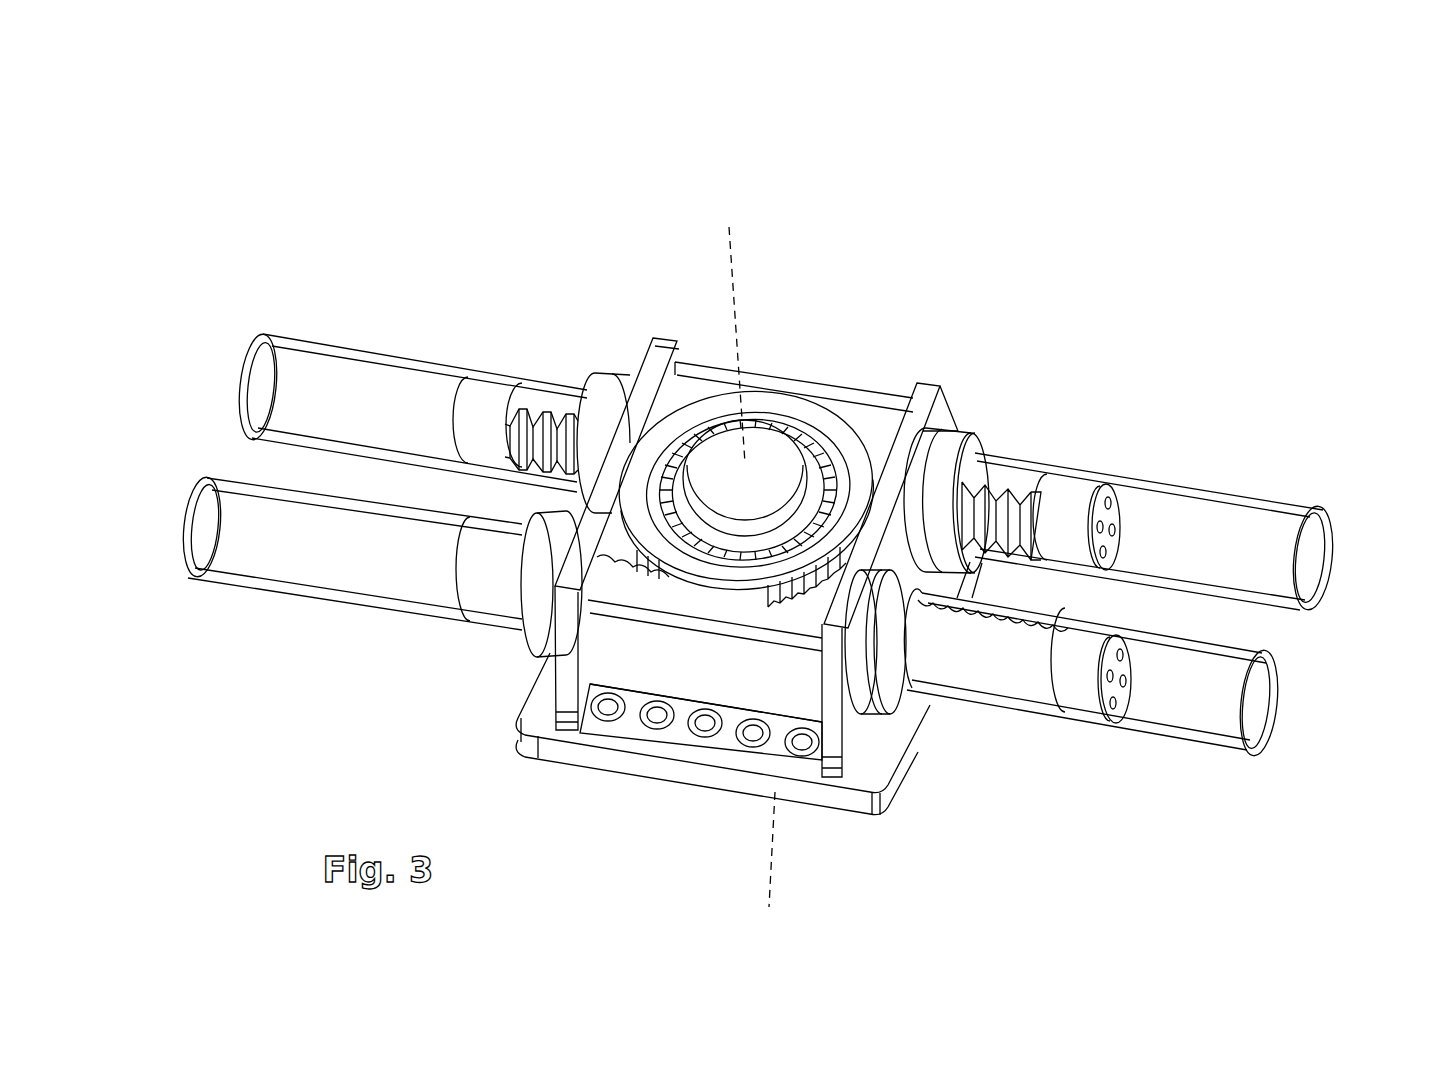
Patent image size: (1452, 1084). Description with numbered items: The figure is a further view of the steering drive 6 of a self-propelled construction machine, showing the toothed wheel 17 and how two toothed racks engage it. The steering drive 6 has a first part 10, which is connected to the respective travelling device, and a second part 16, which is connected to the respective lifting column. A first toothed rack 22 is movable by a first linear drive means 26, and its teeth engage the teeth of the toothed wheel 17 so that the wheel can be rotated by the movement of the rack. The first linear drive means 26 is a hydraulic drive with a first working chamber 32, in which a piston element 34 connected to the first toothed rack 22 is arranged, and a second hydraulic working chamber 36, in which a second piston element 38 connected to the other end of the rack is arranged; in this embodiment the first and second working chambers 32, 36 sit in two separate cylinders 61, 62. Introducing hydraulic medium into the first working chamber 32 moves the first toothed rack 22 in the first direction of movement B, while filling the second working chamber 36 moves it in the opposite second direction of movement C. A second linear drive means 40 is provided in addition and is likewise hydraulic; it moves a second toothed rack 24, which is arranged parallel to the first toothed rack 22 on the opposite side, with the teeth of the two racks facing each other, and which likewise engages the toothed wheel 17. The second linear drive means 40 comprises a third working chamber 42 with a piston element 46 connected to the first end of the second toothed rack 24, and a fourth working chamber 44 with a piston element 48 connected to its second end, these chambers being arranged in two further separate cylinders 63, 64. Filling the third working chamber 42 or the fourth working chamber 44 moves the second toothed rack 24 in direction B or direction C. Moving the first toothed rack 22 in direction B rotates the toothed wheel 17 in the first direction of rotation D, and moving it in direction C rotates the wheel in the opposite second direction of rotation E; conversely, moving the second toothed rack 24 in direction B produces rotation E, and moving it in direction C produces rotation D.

The second part 16 is at (538, 163).
The first linear drive means 26 is at (227, 332).
The first working chamber 32 is at (372, 400).
The cylinder 61 is at (322, 350).
The piston element 34 is at (487, 413).
The first toothed rack 22 is at (560, 403).
The second linear drive means 40 is at (182, 608).
The third working chamber 42 is at (382, 570).
The cylinder 63 is at (290, 592).
The piston element 46 is at (498, 585).
The steering drive 6 is at (917, 337).
The first part 10 is at (777, 790).
The toothed wheel 17 is at (817, 578).
The second hydraulic working chamber 36 is at (1192, 513).
The cylinder 62 is at (1272, 500).
The second piston element 38 is at (1072, 497).
The fourth working chamber 44 is at (1185, 697).
The second toothed rack 24 is at (978, 670).
The piston element 48 is at (1078, 683).
The cylinder 64 is at (1129, 730).
The first direction of movement B is at (222, 376).
The second direction of movement C is at (1346, 569).
The first direction of rotation D is at (747, 280).
The second direction of rotation E is at (718, 283).